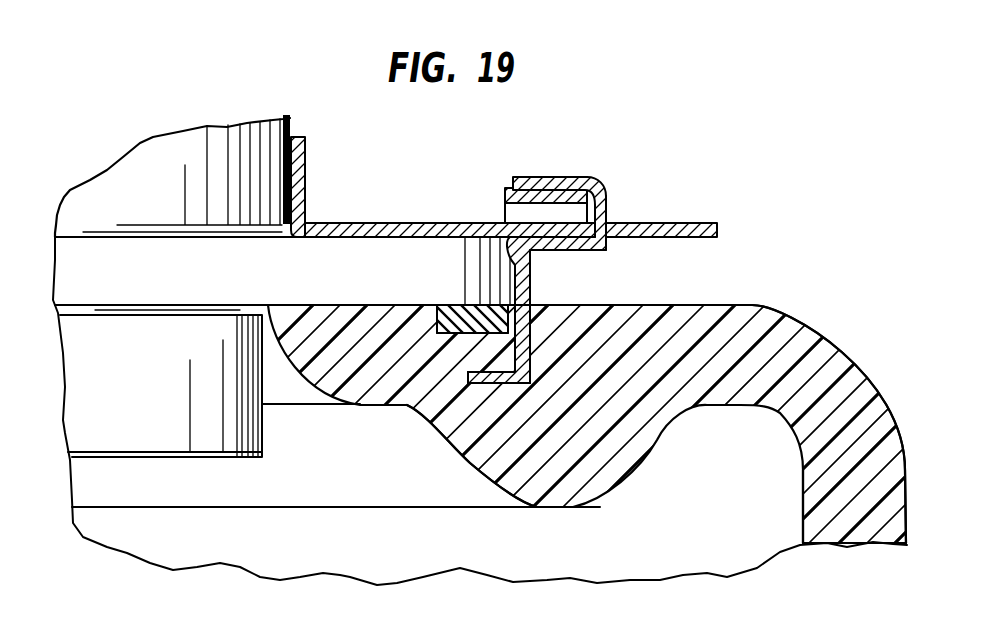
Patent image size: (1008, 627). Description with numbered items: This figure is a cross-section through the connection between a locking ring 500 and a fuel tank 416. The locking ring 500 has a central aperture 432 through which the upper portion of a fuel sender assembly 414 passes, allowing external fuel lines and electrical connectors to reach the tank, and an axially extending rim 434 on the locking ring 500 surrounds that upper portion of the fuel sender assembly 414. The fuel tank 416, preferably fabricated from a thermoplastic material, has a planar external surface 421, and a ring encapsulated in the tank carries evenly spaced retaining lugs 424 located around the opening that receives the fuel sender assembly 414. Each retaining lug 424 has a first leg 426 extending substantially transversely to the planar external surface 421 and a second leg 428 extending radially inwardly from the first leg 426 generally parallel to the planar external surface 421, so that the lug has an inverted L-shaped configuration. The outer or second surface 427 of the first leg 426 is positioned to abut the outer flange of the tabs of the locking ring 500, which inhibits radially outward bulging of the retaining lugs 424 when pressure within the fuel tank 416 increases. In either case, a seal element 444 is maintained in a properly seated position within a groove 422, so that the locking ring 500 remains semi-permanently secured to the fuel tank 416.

The fuel sender assembly 414 is at (180, 152).
The central aperture 432 is at (291, 128).
The axially extending rim 434 is at (306, 172).
The locking ring 500 is at (425, 222).
The seal element 444 is at (442, 305).
The second leg 428 is at (555, 177).
The retaining lugs 424 is at (607, 180).
The outer or second surface 427 is at (608, 200).
The groove 422 is at (531, 287).
The planar external surface 421 is at (668, 305).
The first leg 426 is at (530, 363).
The fuel tank 416 is at (837, 340).